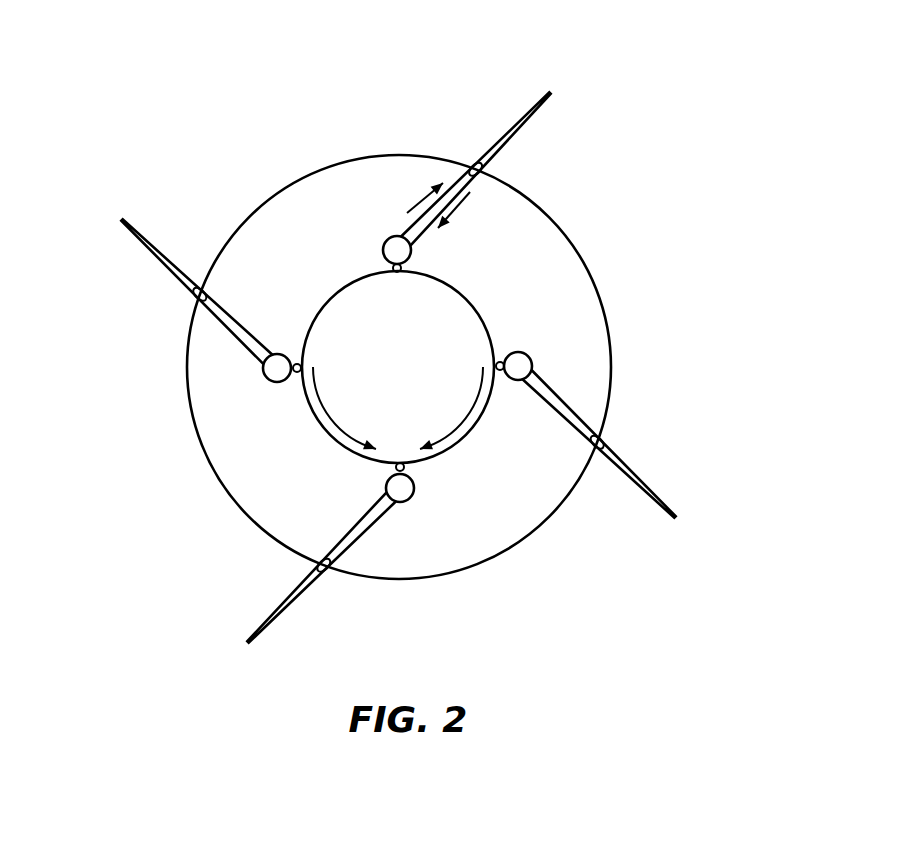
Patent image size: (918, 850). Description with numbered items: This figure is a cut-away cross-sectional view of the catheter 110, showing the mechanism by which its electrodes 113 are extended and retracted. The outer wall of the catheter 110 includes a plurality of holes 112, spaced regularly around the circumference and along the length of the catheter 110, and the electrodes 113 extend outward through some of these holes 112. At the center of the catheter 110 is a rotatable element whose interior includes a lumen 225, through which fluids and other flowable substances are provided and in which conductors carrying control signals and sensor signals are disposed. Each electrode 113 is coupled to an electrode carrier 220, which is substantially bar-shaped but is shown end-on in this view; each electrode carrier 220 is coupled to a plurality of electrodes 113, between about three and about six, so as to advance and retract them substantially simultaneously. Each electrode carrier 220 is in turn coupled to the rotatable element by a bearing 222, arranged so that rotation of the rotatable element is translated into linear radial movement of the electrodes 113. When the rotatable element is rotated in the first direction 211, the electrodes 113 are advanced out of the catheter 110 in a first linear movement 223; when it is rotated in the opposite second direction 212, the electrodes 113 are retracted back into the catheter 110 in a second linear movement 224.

The catheter 110 is at (633, 125).
The holes 112 is at (465, 167).
The electrodes 113 is at (515, 127).
The first direction 211 is at (470, 402).
The second direction 212 is at (328, 402).
The electrode carrier 220 is at (385, 247).
The bearing 222 is at (408, 268).
The first linear movement 223 is at (410, 203).
The second linear movement 224 is at (460, 207).
The lumen 225 is at (420, 383).